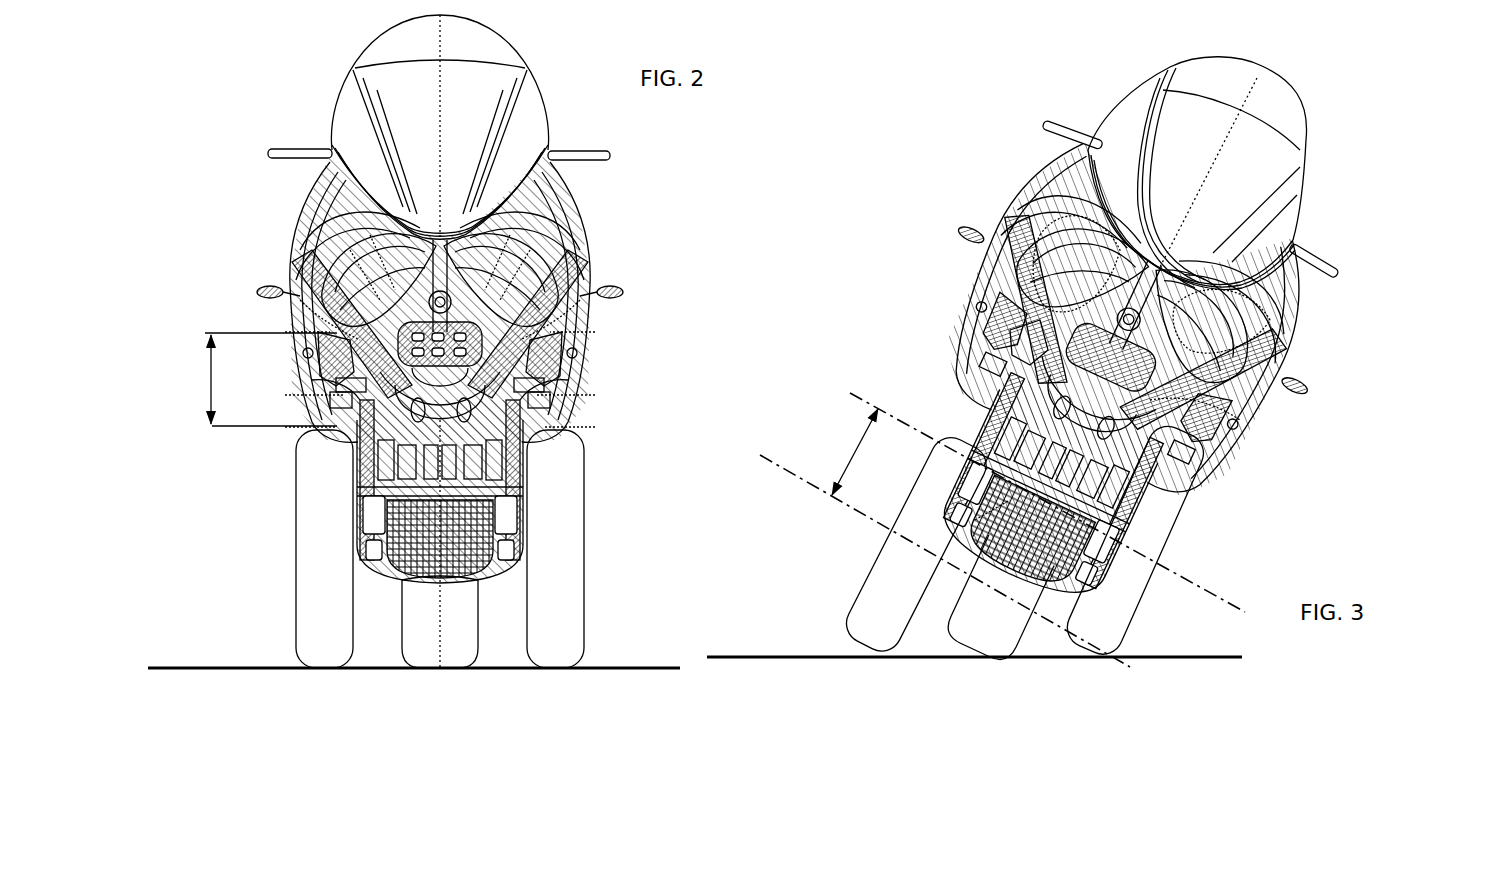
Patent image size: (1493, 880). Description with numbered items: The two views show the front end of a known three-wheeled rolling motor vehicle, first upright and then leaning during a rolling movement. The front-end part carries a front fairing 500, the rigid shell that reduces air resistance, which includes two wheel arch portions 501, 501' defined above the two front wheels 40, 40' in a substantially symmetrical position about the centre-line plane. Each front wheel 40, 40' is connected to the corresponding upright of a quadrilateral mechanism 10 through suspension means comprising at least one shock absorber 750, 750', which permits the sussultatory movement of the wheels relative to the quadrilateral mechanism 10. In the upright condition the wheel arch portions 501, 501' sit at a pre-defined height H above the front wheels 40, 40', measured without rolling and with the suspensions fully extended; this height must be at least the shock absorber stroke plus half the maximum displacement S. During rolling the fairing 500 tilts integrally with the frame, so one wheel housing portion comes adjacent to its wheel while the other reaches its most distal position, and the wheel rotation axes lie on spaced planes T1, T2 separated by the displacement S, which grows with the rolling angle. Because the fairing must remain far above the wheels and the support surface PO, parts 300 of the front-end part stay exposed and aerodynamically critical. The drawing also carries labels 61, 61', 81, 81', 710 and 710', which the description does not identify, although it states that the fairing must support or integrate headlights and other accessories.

In FIG. 3, the quadrilateral mechanism 10 is at (1028, 347).
In FIG. 2, the front wheel 40 is at (537, 549).
In FIG. 3, the front wheel 40 is at (1110, 542).
In FIG. 2, the front wheel 40' is at (265, 549).
In FIG. 3, the front wheel 40' is at (877, 544).
In FIG. 2, the lamp unit 61 is at (621, 266).
In FIG. 2, the lamp unit 61' is at (226, 279).
In FIG. 3, the headlight 81 is at (1300, 321).
In FIG. 3, the headlight 81' is at (1049, 227).
In FIG. 2, the exposed parts of the front-end part 300 is at (568, 390).
In FIG. 3, the exposed parts of the front-end part 300 is at (988, 362).
In FIG. 2, the front fairing 500 is at (332, 137).
In FIG. 3, the front fairing 500 is at (1145, 130).
In FIG. 2, the wheel arch portion 501 is at (589, 324).
In FIG. 3, the wheel arch portion 501 is at (1308, 430).
In FIG. 2, the wheel arch portion 501' is at (276, 294).
In FIG. 2, the light unit 710 is at (605, 553).
In FIG. 2, the light unit 710' is at (252, 513).
In FIG. 2, the shock absorber 750 is at (528, 534).
In FIG. 3, the shock absorber 750' is at (1021, 619).
In FIG. 2, the support surface PO is at (148, 666).
In FIG. 3, the support surface PO is at (893, 659).
In FIG. 2, the height H is at (258, 379).
In FIG. 3, the displacement S is at (851, 452).
In FIG. 3, the plane T1 is at (760, 455).
In FIG. 3, the plane T2 is at (848, 393).